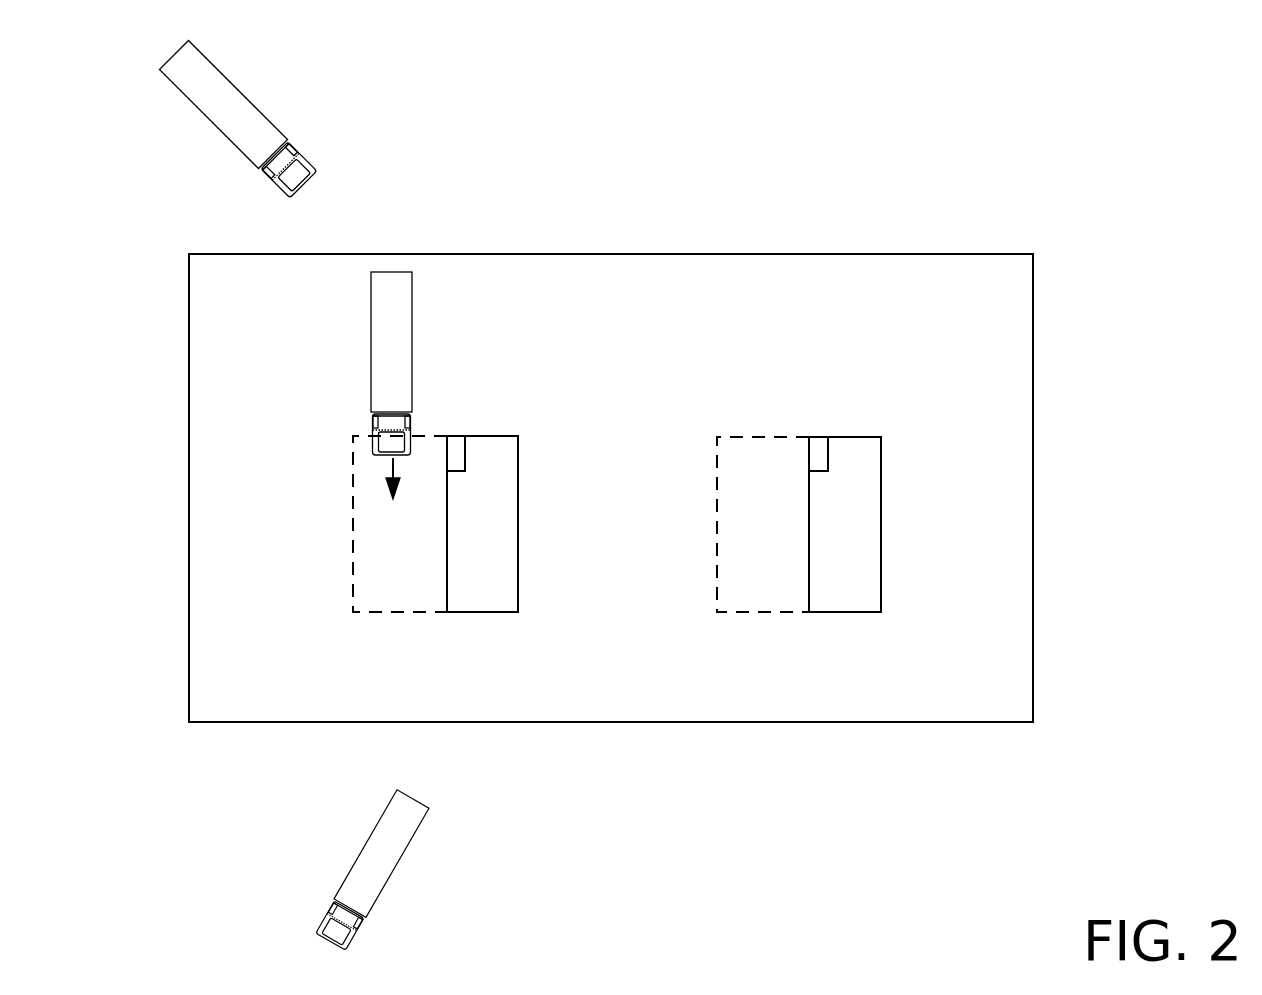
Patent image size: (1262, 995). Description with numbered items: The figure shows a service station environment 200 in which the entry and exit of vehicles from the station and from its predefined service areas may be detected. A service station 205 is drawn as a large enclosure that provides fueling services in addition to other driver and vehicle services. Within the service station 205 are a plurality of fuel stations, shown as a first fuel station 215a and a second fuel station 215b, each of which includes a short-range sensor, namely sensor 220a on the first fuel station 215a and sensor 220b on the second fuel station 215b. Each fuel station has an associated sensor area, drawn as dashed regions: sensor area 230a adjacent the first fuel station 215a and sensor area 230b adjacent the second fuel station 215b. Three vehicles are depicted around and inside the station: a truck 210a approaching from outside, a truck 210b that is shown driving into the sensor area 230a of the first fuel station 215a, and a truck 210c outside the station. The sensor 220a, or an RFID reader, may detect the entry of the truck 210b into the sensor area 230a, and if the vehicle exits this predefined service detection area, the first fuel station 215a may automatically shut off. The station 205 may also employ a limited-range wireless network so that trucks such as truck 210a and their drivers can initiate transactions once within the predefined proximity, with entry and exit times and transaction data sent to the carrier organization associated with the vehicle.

The service station environment 200 is at (962, 128).
The service station 205 is at (738, 306).
The truck 210a is at (212, 67).
The truck 210b is at (412, 348).
The truck 210c is at (377, 825).
The fuel station 215a is at (518, 583).
The fuel station 215b is at (881, 483).
The sensor 220a is at (453, 443).
The sensor 220b is at (821, 436).
The sensor area 230a is at (388, 600).
The sensor area 230b is at (752, 595).